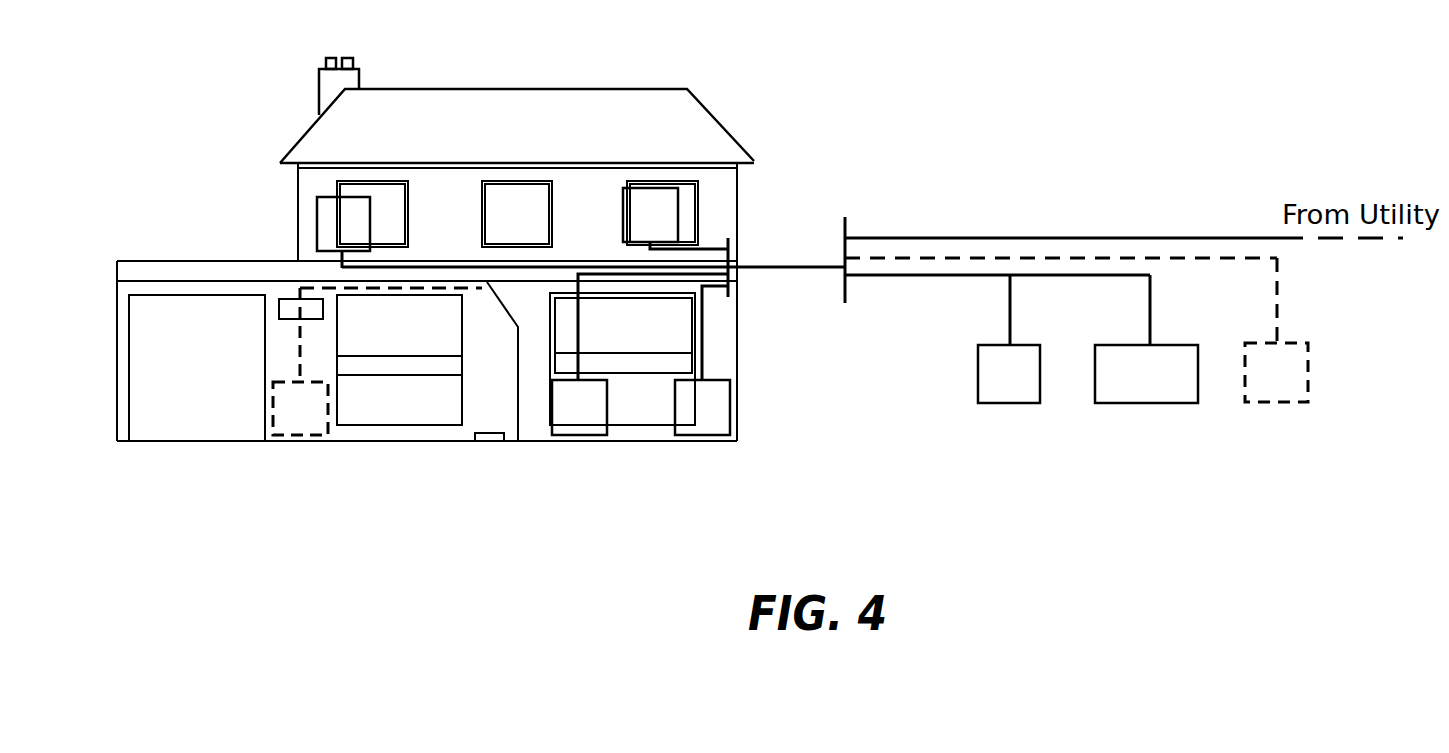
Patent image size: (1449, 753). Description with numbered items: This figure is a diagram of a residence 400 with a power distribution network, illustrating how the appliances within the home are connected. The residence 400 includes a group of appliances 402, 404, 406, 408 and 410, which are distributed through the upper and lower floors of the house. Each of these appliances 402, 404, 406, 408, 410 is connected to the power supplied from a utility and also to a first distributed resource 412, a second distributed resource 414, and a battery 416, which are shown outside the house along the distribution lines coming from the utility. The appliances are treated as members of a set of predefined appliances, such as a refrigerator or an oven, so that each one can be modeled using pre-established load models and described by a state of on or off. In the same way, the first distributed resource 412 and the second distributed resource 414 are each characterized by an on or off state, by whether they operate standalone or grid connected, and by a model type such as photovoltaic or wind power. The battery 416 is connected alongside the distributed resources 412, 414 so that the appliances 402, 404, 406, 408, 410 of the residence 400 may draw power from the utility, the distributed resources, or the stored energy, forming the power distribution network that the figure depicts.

The residence 400 is at (655, 89).
The appliance 402 is at (301, 438).
The appliance 404 is at (582, 438).
The appliance 406 is at (711, 438).
The appliance 408 is at (678, 222).
The appliance 410 is at (312, 228).
The first distributed resource 412 is at (1010, 405).
The second distributed resource 414 is at (1278, 403).
The battery 416 is at (1146, 405).